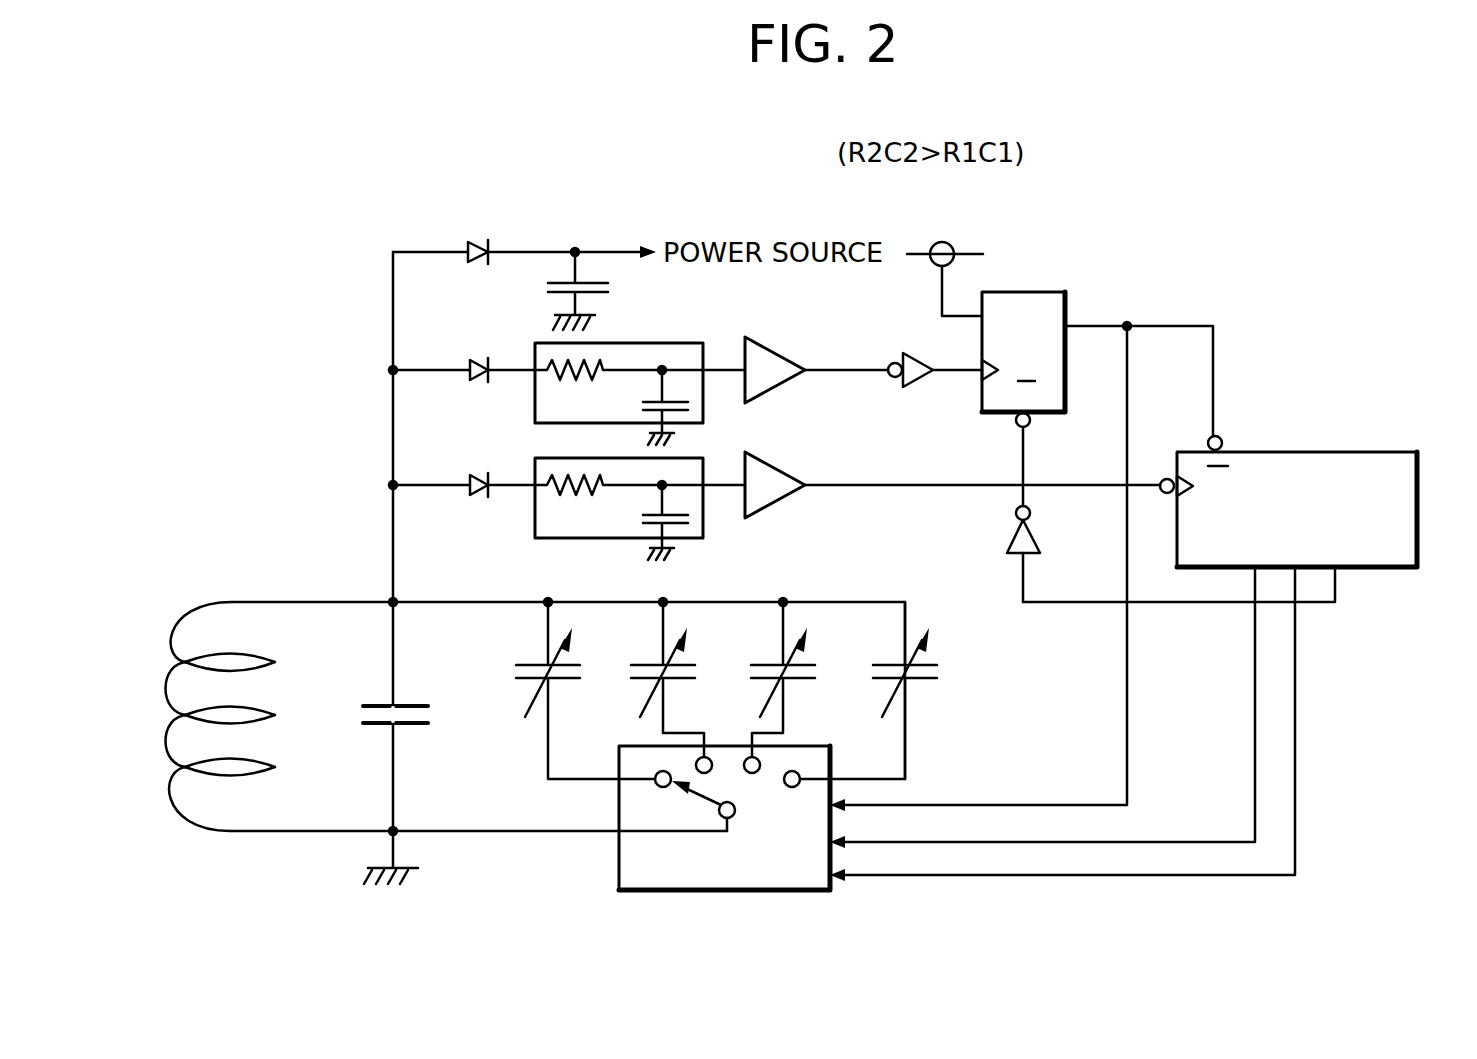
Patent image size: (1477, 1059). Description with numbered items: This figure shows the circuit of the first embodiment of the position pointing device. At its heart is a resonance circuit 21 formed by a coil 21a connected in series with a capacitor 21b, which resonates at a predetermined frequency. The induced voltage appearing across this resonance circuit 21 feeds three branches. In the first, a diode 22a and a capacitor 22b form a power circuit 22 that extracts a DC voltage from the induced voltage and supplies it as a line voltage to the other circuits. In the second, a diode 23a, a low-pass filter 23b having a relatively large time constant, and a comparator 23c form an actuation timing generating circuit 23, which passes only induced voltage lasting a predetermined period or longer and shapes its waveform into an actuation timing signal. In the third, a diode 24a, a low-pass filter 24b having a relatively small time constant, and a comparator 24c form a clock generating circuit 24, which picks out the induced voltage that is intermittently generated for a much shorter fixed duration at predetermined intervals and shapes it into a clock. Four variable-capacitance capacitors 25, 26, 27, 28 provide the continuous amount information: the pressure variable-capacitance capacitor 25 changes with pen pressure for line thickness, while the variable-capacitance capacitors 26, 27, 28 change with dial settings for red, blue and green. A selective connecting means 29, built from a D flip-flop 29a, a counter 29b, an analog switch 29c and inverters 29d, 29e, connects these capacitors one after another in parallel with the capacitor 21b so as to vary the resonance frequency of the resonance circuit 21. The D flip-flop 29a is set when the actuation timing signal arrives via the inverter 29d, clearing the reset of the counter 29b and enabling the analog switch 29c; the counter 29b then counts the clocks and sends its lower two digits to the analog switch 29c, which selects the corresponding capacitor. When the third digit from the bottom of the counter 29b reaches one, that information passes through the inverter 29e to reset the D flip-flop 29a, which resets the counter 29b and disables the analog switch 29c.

The resonance circuit 21 is at (257, 600).
The coil 21a is at (222, 834).
The capacitor 21b is at (370, 726).
The power circuit 22 is at (522, 246).
The diode 22a is at (476, 242).
The capacitor 22b is at (600, 282).
The actuation timing generating circuit 23 is at (793, 348).
The diode 23a is at (478, 362).
The low-pass filter 23b is at (654, 343).
The comparator 23c is at (772, 392).
The clock generating circuit 24 is at (783, 460).
The diode 24a is at (478, 477).
The low-pass filter 24b is at (535, 530).
The comparator 24c is at (765, 508).
The variable-capacitance capacitor 25 is at (535, 665).
The variable-capacitance capacitor 26 is at (658, 665).
The variable-capacitance capacitor 27 is at (778, 665).
The variable-capacitance capacitor 28 is at (895, 665).
The selective connecting means 29 is at (1305, 785).
The D flip-flop 29a is at (1043, 292).
The counter 29b is at (1390, 570).
The analog switch 29c is at (619, 878).
The inverter 29d is at (920, 382).
The inverter 29e is at (1012, 538).